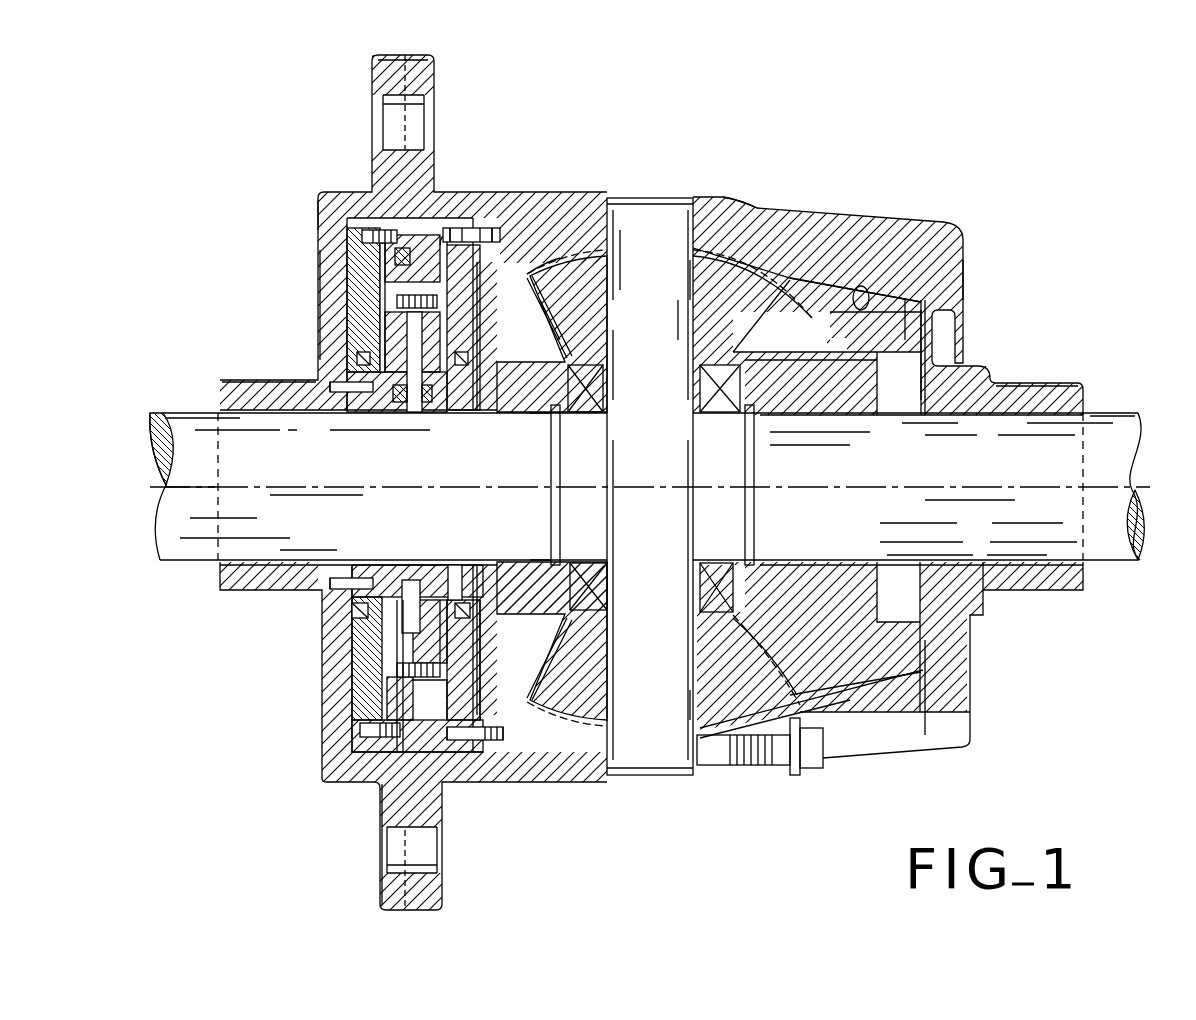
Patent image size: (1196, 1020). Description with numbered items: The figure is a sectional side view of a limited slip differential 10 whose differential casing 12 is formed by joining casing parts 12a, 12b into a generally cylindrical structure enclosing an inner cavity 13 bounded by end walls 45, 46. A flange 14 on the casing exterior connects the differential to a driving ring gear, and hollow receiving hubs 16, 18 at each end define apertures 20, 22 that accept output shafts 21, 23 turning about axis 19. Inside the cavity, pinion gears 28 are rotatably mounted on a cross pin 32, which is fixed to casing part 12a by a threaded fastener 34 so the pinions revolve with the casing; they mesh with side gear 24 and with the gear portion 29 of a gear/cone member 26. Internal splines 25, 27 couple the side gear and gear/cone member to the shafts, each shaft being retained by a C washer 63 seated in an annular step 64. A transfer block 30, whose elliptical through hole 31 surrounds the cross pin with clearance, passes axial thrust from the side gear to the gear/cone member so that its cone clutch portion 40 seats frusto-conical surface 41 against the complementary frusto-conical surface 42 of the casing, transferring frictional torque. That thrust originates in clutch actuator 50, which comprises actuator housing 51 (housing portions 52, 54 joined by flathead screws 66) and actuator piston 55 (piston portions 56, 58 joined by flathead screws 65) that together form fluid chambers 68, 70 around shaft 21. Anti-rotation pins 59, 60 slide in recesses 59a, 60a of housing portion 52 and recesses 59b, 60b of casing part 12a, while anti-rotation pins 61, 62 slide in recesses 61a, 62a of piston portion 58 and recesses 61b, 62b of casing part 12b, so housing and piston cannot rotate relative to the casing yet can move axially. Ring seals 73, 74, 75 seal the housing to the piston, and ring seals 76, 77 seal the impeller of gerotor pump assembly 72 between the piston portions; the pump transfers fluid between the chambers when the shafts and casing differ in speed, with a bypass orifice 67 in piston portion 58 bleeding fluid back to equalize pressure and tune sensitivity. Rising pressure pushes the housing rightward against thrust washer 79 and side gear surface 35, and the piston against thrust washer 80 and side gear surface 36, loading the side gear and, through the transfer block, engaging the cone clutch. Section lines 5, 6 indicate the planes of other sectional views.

The limited slip differential 10 is at (972, 117).
The differential casing 12 is at (553, 192).
The casing part 12a is at (963, 280).
The casing part 12b is at (318, 195).
The inner cavity 13 is at (498, 236).
The flange 14 is at (424, 78).
The receiving hub 16 is at (245, 380).
The receiving hub 18 is at (1050, 385).
The axis 19 is at (155, 447).
The aperture 20 is at (228, 560).
The output shaft 21 is at (168, 540).
The aperture 22 is at (1080, 565).
The output shaft 23 is at (1110, 413).
The side gear 24 is at (555, 650).
The internal spline 25 is at (540, 425).
The gear/cone member 26 is at (848, 700).
The internal spline 27 is at (832, 416).
The pinion gear 28 is at (690, 285).
The gear portion 29 is at (823, 290).
The transfer block 30 is at (708, 585).
The elliptical through hole 31 is at (640, 580).
The cross pin 32 is at (657, 198).
The threaded fastener 34 is at (815, 776).
The side gear surface 35 is at (516, 322).
The side gear surface 36 is at (545, 352).
The cone clutch portion 40 is at (958, 255).
The frusto-conical surface 41 is at (905, 300).
The frusto-conical surface 42 is at (852, 290).
The end wall 45 is at (968, 665).
The end wall 46 is at (325, 316).
The clutch actuator 50 is at (345, 294).
The actuator housing 51 is at (426, 220).
The housing portion 52 is at (392, 780).
The housing portion 54 is at (358, 706).
The actuator piston 55 is at (464, 418).
The piston portion 56 is at (480, 610).
The piston portion 58 is at (400, 578).
The anti-rotation pin 59 is at (470, 230).
The recess 59a is at (462, 230).
The recess 59b is at (480, 230).
The anti-rotation pin 60 is at (472, 742).
The recess 60a is at (462, 742).
The recess 60b is at (485, 742).
The anti-rotation pin 61 is at (357, 357).
The recess 61a is at (368, 396).
The recess 61b is at (340, 368).
The anti-rotation pin 62 is at (352, 610).
The recess 62a is at (368, 578).
The recess 62b is at (340, 596).
The C washer 63 is at (560, 498).
The annular step 64 is at (600, 428).
The flathead screw 65 is at (358, 696).
The flathead screw 66 is at (360, 730).
The bypass orifice 67 is at (397, 258).
The fluid chamber 68 is at (397, 672).
The fluid chamber 70 is at (440, 695).
The gerotor pump assembly 72 is at (392, 650).
The ring seal 73 is at (362, 236).
The ring seal 74 is at (450, 598).
The ring seal 75 is at (402, 610).
The ring seal 76 is at (455, 412).
The ring seal 77 is at (400, 412).
The thrust washer 79 is at (552, 318).
The thrust washer 80 is at (586, 385).
The section line 5- 5 is at (405, 228).
The section line 6- 6 is at (525, 478).